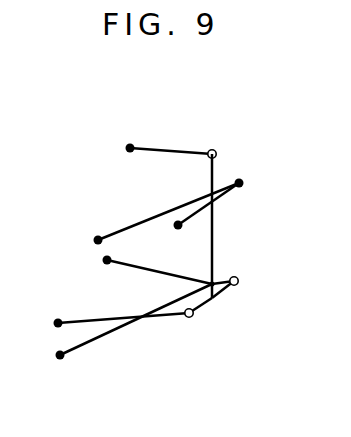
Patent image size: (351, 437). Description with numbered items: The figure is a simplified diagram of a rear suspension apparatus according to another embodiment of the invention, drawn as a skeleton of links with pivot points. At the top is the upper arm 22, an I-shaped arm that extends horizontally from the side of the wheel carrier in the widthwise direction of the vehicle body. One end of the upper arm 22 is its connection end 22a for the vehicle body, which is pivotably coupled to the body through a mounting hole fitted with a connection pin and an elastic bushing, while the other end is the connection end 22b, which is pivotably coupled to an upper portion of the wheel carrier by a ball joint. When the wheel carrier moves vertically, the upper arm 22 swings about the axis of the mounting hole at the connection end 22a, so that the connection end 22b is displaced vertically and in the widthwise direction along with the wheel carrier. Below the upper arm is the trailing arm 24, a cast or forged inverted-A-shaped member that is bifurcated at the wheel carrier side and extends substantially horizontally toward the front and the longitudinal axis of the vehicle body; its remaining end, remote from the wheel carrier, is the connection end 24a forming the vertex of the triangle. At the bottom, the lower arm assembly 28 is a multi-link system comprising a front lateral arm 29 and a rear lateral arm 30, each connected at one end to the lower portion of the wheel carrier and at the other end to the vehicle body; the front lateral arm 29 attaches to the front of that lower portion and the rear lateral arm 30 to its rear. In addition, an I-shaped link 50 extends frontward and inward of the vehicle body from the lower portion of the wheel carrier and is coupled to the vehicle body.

The upper arm 22 is at (178, 146).
The connection end 22a is at (127, 146).
The connection end 22b is at (214, 150).
The trailing arm 24 is at (138, 220).
The connection end 24a is at (95, 238).
The lower arm assembly 28 is at (55, 256).
The link 29 is at (113, 319).
The rear lateral arm 30 is at (137, 266).
The I-shaped link 50 is at (122, 326).